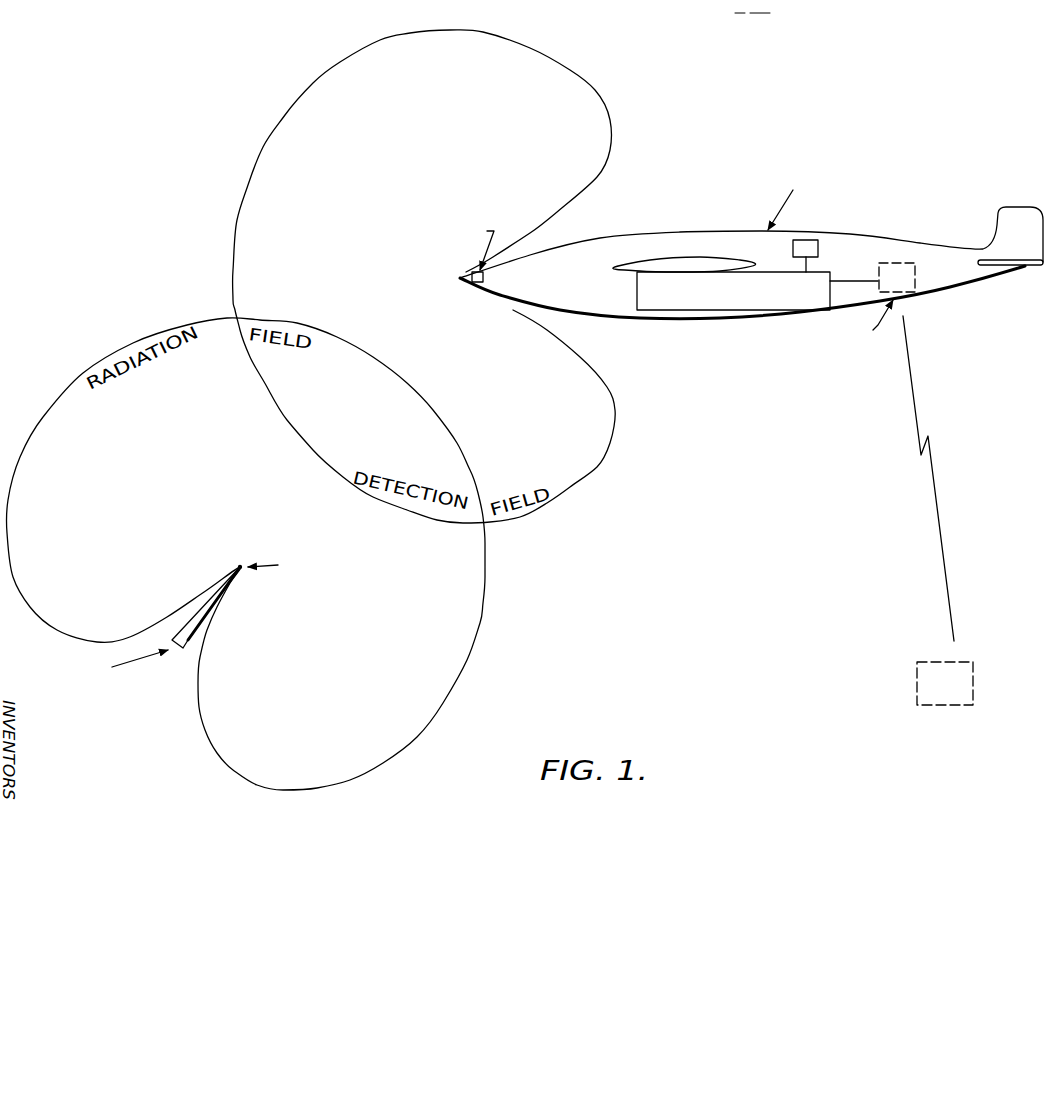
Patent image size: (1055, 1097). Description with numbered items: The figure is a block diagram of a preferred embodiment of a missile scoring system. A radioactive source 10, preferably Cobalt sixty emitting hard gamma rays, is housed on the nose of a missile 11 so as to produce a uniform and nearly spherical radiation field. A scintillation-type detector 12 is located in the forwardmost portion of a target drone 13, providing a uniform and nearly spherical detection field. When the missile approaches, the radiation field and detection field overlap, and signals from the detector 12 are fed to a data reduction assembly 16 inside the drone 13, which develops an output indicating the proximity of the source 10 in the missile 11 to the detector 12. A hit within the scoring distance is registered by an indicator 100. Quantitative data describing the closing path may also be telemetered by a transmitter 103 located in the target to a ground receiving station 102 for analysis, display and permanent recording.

The radioactive source 10 is at (236, 567).
The missile 11 is at (187, 648).
The scintillation-type detector 12 is at (478, 284).
The drone 13 is at (708, 238).
The data reduction assembly 16 is at (655, 308).
The indicator 100 is at (793, 249).
The ground receiving station 102 is at (917, 684).
The transmitter 103 is at (886, 264).